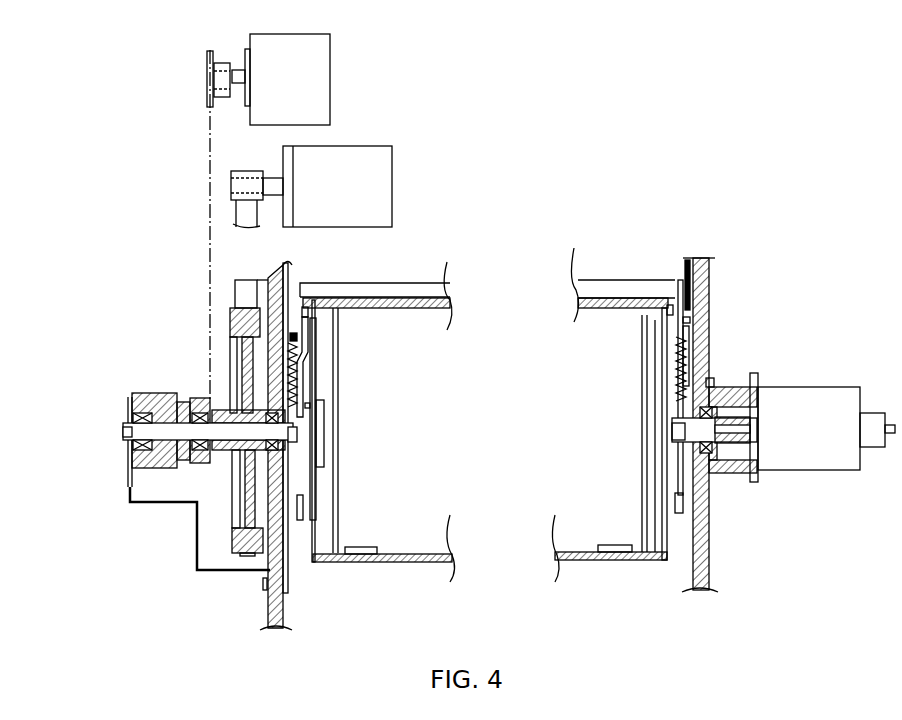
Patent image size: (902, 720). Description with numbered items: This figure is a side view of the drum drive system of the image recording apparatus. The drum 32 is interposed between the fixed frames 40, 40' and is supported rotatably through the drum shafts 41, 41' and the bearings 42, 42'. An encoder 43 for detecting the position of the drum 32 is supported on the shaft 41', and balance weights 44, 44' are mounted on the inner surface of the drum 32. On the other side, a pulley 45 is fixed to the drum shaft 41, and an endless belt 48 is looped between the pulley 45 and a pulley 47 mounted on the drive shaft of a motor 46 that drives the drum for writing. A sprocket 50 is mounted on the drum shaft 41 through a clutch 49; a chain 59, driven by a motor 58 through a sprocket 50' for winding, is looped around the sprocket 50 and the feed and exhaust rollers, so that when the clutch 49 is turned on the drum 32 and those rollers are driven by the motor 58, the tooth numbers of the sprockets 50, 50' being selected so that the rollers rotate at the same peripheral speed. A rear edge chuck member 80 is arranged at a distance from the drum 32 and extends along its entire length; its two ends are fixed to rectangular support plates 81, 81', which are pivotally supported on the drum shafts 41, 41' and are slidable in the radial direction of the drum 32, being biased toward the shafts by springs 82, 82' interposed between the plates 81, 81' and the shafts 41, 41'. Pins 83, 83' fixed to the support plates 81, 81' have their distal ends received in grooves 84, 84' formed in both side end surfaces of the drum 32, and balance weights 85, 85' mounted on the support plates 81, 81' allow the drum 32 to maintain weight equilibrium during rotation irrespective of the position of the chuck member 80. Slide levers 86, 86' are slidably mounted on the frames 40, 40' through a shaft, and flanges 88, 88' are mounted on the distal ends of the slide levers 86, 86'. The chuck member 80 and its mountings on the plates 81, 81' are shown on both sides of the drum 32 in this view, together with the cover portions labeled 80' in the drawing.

The drum 32 is at (420, 563).
The fixed frame 40 is at (243, 449).
The fixed frame 40' is at (740, 433).
The drum shaft 41 is at (210, 483).
The drum shaft 41' is at (730, 469).
The bearing 42 is at (211, 544).
The bearing 42' is at (754, 403).
The encoder 43 is at (823, 392).
The balance weight 44 is at (375, 523).
The balance weight 44' is at (602, 521).
The pulley 45 is at (230, 323).
The motor 46 is at (387, 187).
The pulley 47 is at (233, 183).
The endless belt 48 is at (238, 212).
The clutch 49 is at (135, 393).
The sprocket 50 is at (185, 408).
The sprocket 50' is at (195, 79).
The motor 58 is at (320, 77).
The chain 59 is at (210, 135).
The rear edge chuck member 80 is at (376, 282).
The cover 80' is at (613, 415).
The support plate 81 is at (358, 419).
The support plate 81' is at (628, 356).
The spring 82 is at (341, 394).
The spring 82' is at (628, 371).
The pin 83 is at (318, 417).
The pin 83' is at (654, 363).
The groove 84 is at (348, 329).
The groove 84' is at (628, 326).
The balance weight 85 is at (304, 555).
The balance weight 85' is at (735, 528).
The slide lever 86 is at (258, 258).
The slide lever 86' is at (682, 257).
The flange 88 is at (354, 367).
The flange 88' is at (730, 313).